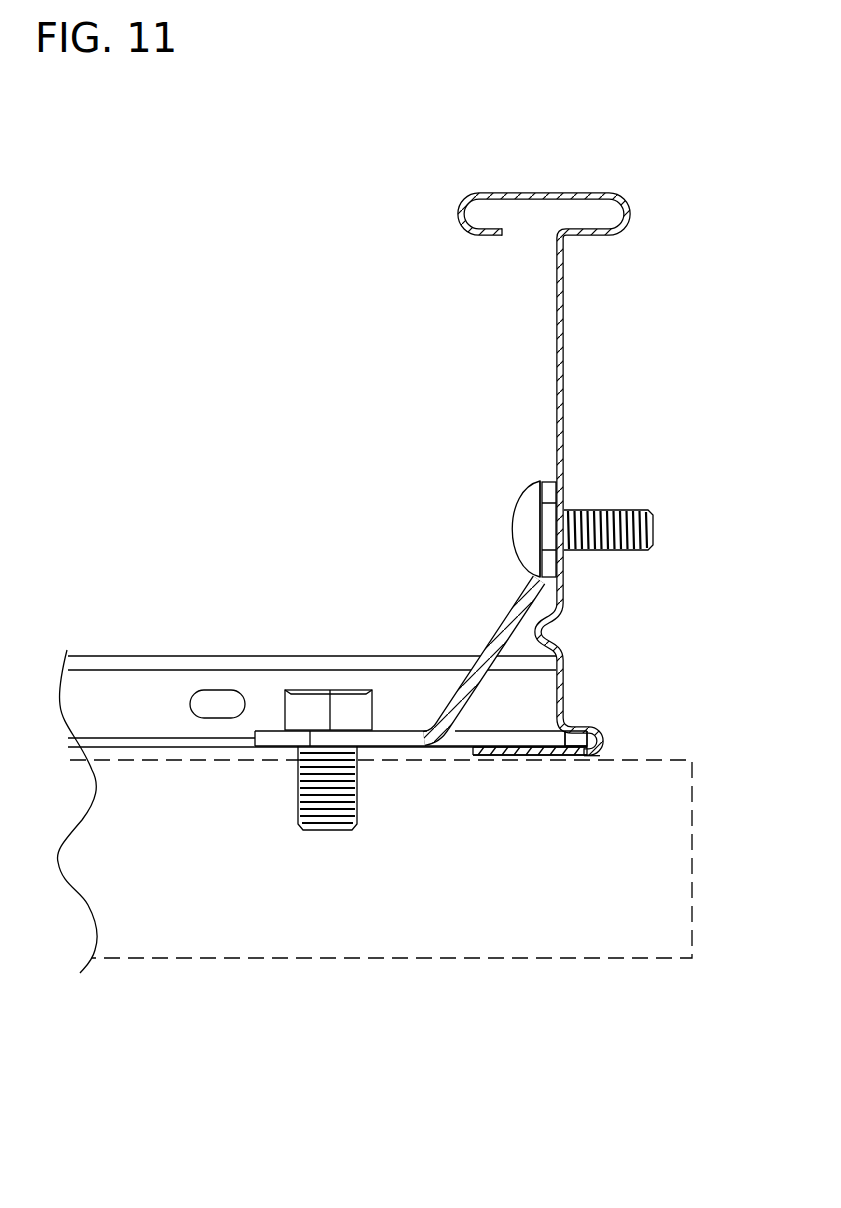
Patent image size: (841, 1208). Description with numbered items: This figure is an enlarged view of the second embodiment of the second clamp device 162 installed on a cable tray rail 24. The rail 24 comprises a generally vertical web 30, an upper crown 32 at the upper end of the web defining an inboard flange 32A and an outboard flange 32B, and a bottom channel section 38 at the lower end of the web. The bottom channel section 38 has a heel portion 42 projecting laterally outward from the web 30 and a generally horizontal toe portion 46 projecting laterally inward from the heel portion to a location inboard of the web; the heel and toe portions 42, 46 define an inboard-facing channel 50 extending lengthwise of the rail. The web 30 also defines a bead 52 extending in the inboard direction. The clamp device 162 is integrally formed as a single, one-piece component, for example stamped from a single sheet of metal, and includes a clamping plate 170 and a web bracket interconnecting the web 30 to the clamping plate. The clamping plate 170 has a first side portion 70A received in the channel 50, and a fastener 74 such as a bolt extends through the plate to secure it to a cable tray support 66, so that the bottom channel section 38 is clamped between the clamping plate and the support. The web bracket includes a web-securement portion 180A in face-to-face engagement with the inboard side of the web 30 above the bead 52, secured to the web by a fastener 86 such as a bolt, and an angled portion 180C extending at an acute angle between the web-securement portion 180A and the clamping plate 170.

The rail 24 is at (569, 297).
The web 30 is at (565, 384).
The upper crown 32 is at (547, 191).
The inboard flange 32A is at (458, 221).
The outboard flange 32B is at (632, 216).
The bottom channel section 38 is at (527, 767).
The heel portion 42 is at (600, 730).
The toe portion 46 is at (498, 758).
The channel 50 is at (600, 762).
The bead 52 is at (537, 636).
The cable tray support 66 is at (388, 960).
The first side portion 70A is at (578, 748).
The fastener 74 is at (300, 705).
The fastener 86 is at (517, 517).
The second clamp device 162 is at (433, 620).
The clamping plate 170 is at (452, 756).
The web-securement portion 180A is at (553, 522).
The angled portion 180C is at (510, 632).